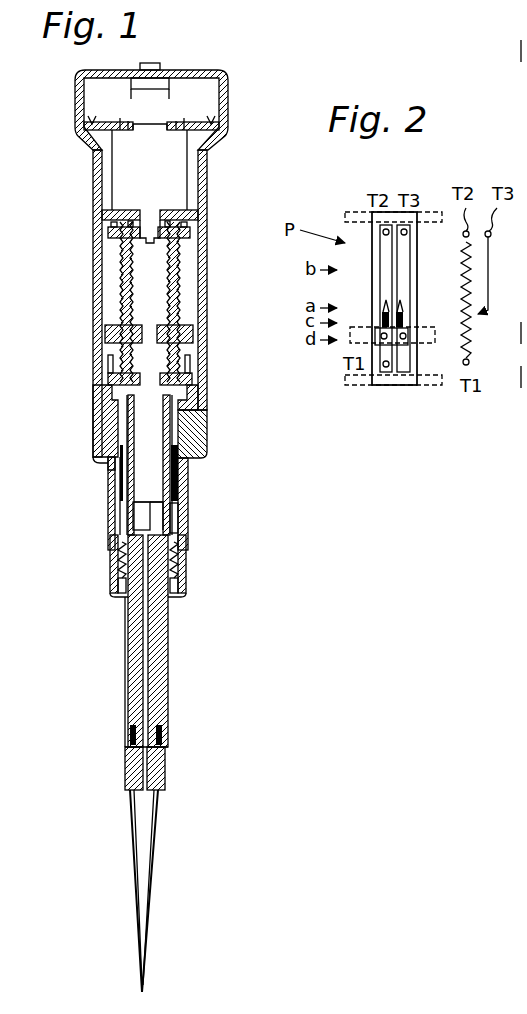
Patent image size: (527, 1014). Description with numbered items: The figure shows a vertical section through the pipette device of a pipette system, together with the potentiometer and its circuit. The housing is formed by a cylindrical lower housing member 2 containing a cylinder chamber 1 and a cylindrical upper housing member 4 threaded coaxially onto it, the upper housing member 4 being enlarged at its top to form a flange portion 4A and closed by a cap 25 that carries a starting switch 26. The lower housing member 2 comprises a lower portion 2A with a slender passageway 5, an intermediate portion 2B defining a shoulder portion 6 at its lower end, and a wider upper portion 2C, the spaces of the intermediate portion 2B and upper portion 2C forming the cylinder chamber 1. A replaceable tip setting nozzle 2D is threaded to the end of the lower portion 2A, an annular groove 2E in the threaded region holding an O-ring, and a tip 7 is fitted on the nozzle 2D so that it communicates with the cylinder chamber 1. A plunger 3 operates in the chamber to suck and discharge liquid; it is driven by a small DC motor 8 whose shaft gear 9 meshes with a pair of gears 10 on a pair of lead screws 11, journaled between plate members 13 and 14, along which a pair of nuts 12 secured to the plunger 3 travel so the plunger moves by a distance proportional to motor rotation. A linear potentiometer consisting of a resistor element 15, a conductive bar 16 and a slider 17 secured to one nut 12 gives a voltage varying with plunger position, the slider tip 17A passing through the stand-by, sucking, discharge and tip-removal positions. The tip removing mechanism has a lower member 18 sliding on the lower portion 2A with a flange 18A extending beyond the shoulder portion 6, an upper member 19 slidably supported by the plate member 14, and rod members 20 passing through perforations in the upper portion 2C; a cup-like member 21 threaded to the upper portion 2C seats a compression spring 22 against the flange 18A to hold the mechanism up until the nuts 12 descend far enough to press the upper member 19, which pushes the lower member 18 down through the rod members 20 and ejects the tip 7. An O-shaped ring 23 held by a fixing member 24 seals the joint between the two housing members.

In FIG. 1, the cylinder chamber 1 is at (150, 520).
In FIG. 1, the lower housing member 2 is at (130, 680).
In FIG. 1, the lower portion 2A is at (160, 635).
In FIG. 1, the intermediate portion 2B is at (178, 500).
In FIG. 1, the upper portion 2C is at (190, 472).
In FIG. 1, the tip setting nozzle 2D is at (168, 775).
In FIG. 1, the annular groove 2E is at (168, 742).
In FIG. 1, the plunger 3 is at (132, 485).
In FIG. 1, the upper housing member 4 is at (97, 270).
In FIG. 1, the flange portion 4A is at (88, 138).
In FIG. 1, the slender passageway 5 is at (130, 625).
In FIG. 1, the shoulder portion 6 is at (180, 520).
In FIG. 1, the tip 7 is at (130, 845).
In FIG. 1, the DC motor 8 is at (118, 182).
In FIG. 1, the gear 9 is at (158, 245).
In FIG. 1, the gears 10 is at (105, 232).
In FIG. 1, the lead screws 11 is at (122, 297).
In FIG. 1, the nuts 12 is at (108, 335).
In FIG. 2, the nuts 12 is at (425, 346).
In FIG. 1, the plate member 13 is at (200, 216).
In FIG. 1, the plate member 14 is at (195, 380).
In FIG. 2, the resistor element 15 is at (383, 245).
In FIG. 2, the conductive bar 16 is at (403, 250).
In FIG. 2, the slider 17 is at (402, 318).
In FIG. 2, the slider tip 17A is at (388, 312).
In FIG. 1, the lower member 18 is at (120, 605).
In FIG. 1, the flange 18A is at (190, 560).
In FIG. 1, the upper member 19 is at (100, 395).
In FIG. 1, the rod members 20 is at (108, 465).
In FIG. 1, the cup-like member 21 is at (115, 550).
In FIG. 1, the compression spring 22 is at (118, 566).
In FIG. 1, the O-shaped ring 23 is at (200, 438).
In FIG. 1, the fixing member 24 is at (205, 412).
In FIG. 1, the cap 25 is at (220, 76).
In FIG. 1, the starting switch 26 is at (158, 70).